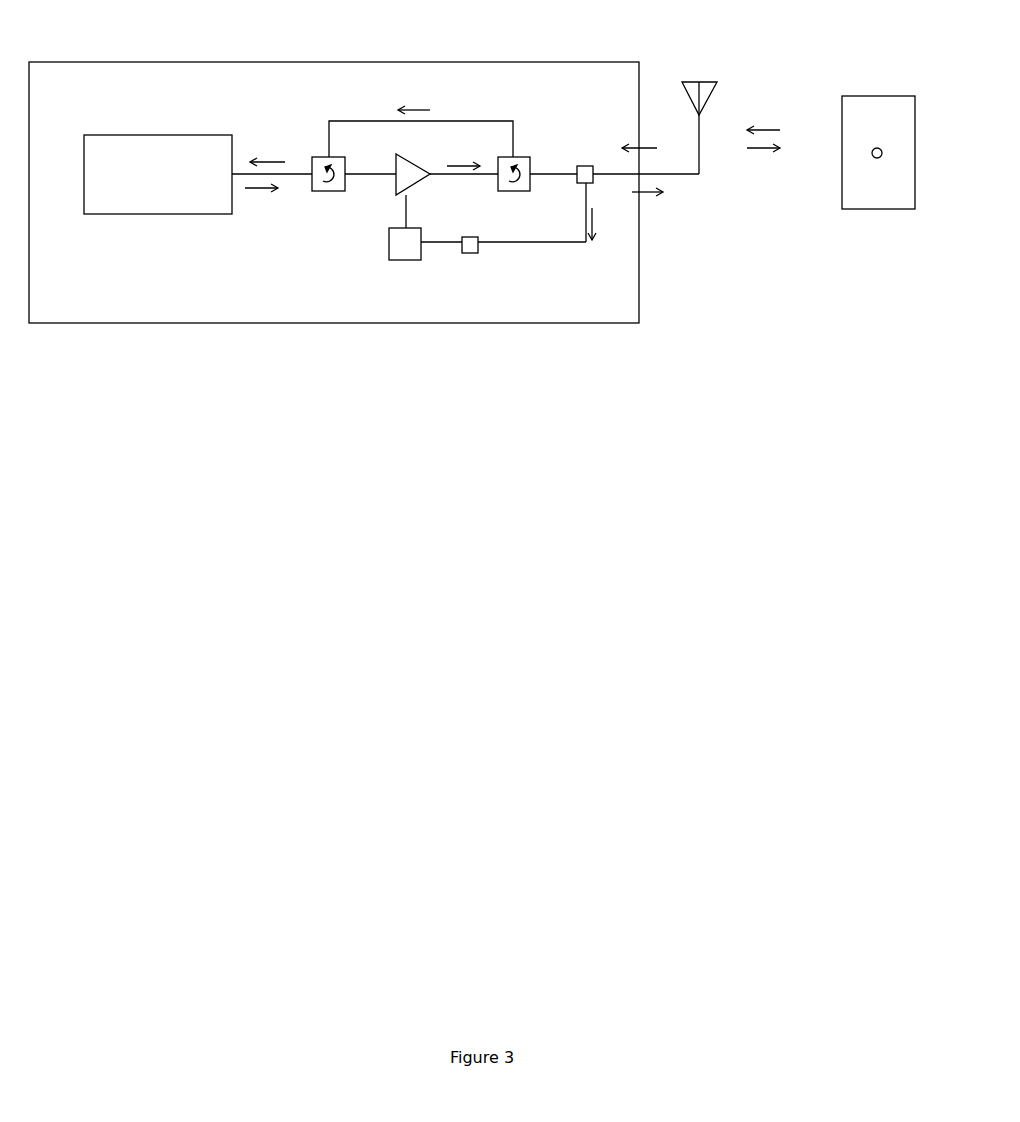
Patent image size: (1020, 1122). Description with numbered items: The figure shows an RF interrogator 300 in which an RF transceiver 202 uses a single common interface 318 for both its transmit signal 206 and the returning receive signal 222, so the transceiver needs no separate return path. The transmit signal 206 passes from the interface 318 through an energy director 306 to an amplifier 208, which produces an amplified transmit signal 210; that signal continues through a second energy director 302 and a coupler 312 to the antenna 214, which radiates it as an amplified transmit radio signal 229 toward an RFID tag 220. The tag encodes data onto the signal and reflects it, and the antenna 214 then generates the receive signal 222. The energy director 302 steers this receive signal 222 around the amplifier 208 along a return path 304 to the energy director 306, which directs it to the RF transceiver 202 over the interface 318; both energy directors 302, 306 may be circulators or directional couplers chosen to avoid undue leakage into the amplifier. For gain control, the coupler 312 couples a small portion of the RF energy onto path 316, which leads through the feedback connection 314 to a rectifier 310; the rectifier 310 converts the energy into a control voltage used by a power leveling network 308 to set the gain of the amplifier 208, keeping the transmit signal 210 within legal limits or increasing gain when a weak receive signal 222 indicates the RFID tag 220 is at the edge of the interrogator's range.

The RF interrogator 300 is at (335, 61).
The RF transceiver 202 is at (153, 135).
The transmit signal 206 is at (262, 190).
The receive signal 222 is at (271, 162).
The amplified transmit signal 210 is at (458, 164).
The common interface 318 is at (293, 175).
The energy director 306 is at (337, 191).
The return path 304 is at (515, 137).
The amplifier 208 is at (417, 158).
The energy director 302 is at (531, 164).
The coupler 312 is at (595, 183).
The path 316 is at (595, 218).
The feedback line 314 is at (523, 245).
The rectifier 310 is at (471, 253).
The power leveling network 308 is at (422, 228).
The antenna 214 is at (708, 98).
The amplified transmit radio signal 229 is at (767, 129).
The RFID tag 220 is at (878, 210).